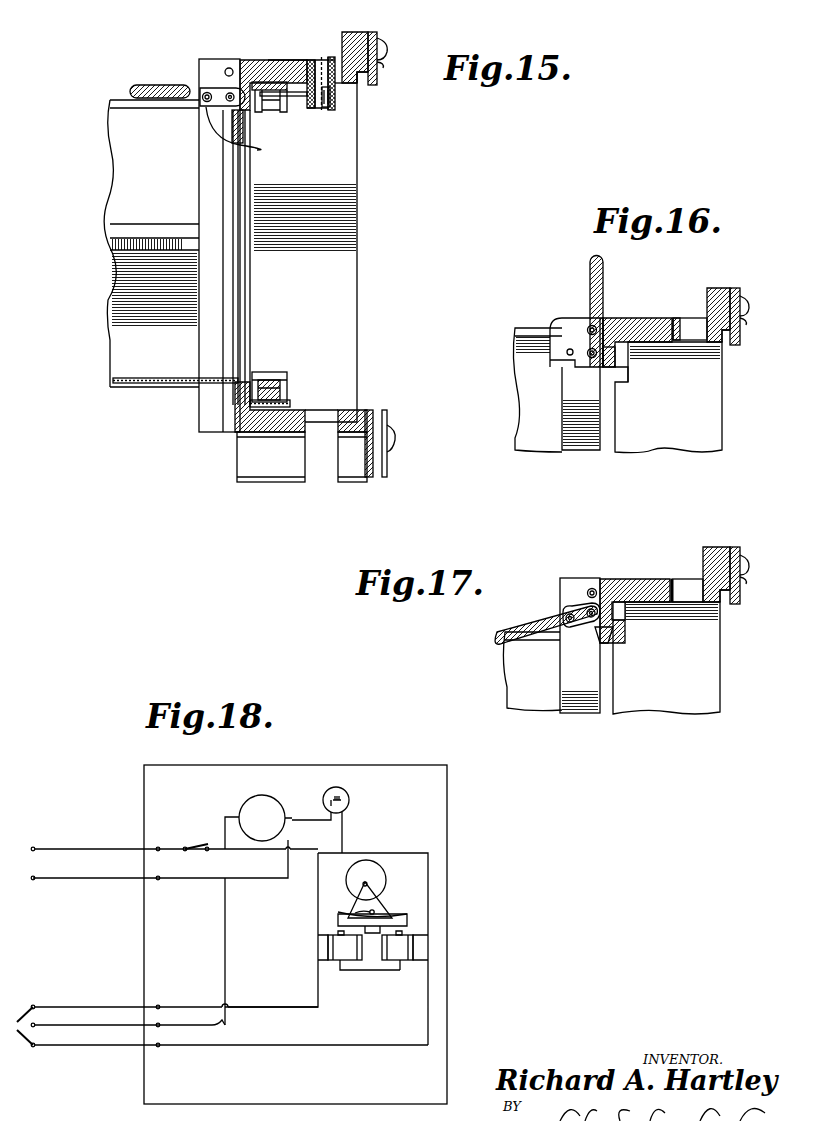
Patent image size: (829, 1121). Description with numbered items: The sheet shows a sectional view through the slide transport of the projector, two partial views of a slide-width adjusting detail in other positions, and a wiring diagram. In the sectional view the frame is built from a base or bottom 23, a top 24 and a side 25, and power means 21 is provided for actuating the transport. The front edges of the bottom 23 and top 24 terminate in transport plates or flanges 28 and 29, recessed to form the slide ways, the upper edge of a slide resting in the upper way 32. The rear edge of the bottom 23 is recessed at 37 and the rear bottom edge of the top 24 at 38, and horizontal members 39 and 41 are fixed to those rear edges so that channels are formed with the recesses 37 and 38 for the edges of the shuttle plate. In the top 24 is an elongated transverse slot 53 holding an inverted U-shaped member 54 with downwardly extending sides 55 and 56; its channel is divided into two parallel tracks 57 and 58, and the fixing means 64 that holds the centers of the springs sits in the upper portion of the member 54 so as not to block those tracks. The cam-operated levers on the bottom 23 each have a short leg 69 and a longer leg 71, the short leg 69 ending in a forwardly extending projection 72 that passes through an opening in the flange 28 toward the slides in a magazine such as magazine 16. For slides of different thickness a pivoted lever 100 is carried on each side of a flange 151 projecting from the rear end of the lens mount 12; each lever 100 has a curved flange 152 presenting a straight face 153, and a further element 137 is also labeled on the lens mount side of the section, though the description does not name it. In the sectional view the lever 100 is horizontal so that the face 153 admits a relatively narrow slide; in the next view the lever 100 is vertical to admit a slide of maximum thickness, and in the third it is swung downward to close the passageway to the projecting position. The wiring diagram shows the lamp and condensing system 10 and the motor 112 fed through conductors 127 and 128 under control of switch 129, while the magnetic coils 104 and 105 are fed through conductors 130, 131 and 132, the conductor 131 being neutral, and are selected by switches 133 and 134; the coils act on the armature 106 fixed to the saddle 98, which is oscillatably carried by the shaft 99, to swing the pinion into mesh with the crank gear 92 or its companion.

In FIG. 15, the lens mount 12 is at (110, 315).
In FIG. 15, the magazine 16 is at (113, 380).
In FIG. 15, the power means 21 is at (340, 187).
In FIG. 15, the base or bottom 23 is at (300, 412).
In FIG. 15, the top 24 is at (256, 62).
In FIG. 16, the top 24 is at (637, 318).
In FIG. 17, the top 24 is at (645, 579).
In FIG. 16, the side 25 is at (700, 440).
In FIG. 17, the side 25 is at (700, 692).
In FIG. 15, the transport plate or flange 28 is at (255, 370).
In FIG. 15, the transport plate or flange 29 is at (245, 125).
In FIG. 16, the transport plate or flange 29 is at (616, 364).
In FIG. 17, the transport plate or flange 29 is at (626, 635).
In FIG. 16, the upper slide way 32 is at (622, 382).
In FIG. 17, the upper slide way 32 is at (613, 645).
In FIG. 15, the recess 37 is at (372, 415).
In FIG. 15, the recess 38 is at (363, 77).
In FIG. 16, the recess 38 is at (730, 335).
In FIG. 17, the recess 38 is at (734, 600).
In FIG. 15, the horizontal member 39 is at (388, 438).
In FIG. 15, the horizontal member 41 is at (379, 41).
In FIG. 16, the horizontal member 41 is at (741, 293).
In FIG. 17, the horizontal member 41 is at (740, 550).
In FIG. 16, the elongated transverse slot 53 is at (686, 320).
In FIG. 17, the elongated transverse slot 53 is at (680, 580).
In FIG. 15, the inverted U-shaped member 54 is at (298, 62).
In FIG. 15, the downwardly extending side 55 is at (310, 97).
In FIG. 15, the downwardly extending side 56 is at (331, 97).
In FIG. 15, the track or guideway 57 is at (321, 112).
In FIG. 15, the track or guideway 58 is at (329, 105).
In FIG. 15, the fixing means 64 is at (331, 57).
In FIG. 15, the short leg 69 is at (283, 385).
In FIG. 15, the long leg 71 is at (292, 397).
In FIG. 15, the forwardly extending projection 72 is at (278, 112).
In FIG. 15, the pivoted lever 100 is at (168, 85).
In FIG. 16, the pivoted lever 100 is at (590, 272).
In FIG. 17, the pivoted lever 100 is at (525, 632).
In FIG. 15, the rail 137 is at (163, 242).
In FIG. 15, the flange 151 is at (209, 60).
In FIG. 16, the flange 151 is at (580, 432).
In FIG. 17, the flange 151 is at (570, 590).
In FIG. 15, the curved flange 152 is at (204, 107).
In FIG. 16, the curved flange 152 is at (560, 323).
In FIG. 17, the curved flange 152 is at (578, 648).
In FIG. 15, the straight face 153 is at (232, 147).
In FIG. 16, the straight face 153 is at (560, 368).
In FIG. 17, the straight face 153 is at (568, 660).
In FIG. 18, the lamp and condensing system 10 is at (359, 797).
In FIG. 18, the crank gear 92 is at (384, 876).
In FIG. 18, the saddle 98 is at (392, 905).
In FIG. 18, the shaft 99 is at (355, 912).
In FIG. 18, the magnetic coil 104 is at (400, 950).
In FIG. 18, the magnetic coil 105 is at (340, 950).
In FIG. 18, the armature 106 is at (408, 917).
In FIG. 18, the motor 112 is at (256, 796).
In FIG. 18, the conductor 127 is at (90, 848).
In FIG. 18, the conductor 128 is at (80, 880).
In FIG. 18, the switch 129 is at (196, 846).
In FIG. 18, the conductor 130 is at (193, 1005).
In FIG. 18, the conductor 131 is at (228, 1025).
In FIG. 18, the conductor 132 is at (205, 1047).
In FIG. 18, the switch 133 is at (24, 1042).
In FIG. 18, the switch 134 is at (28, 1005).